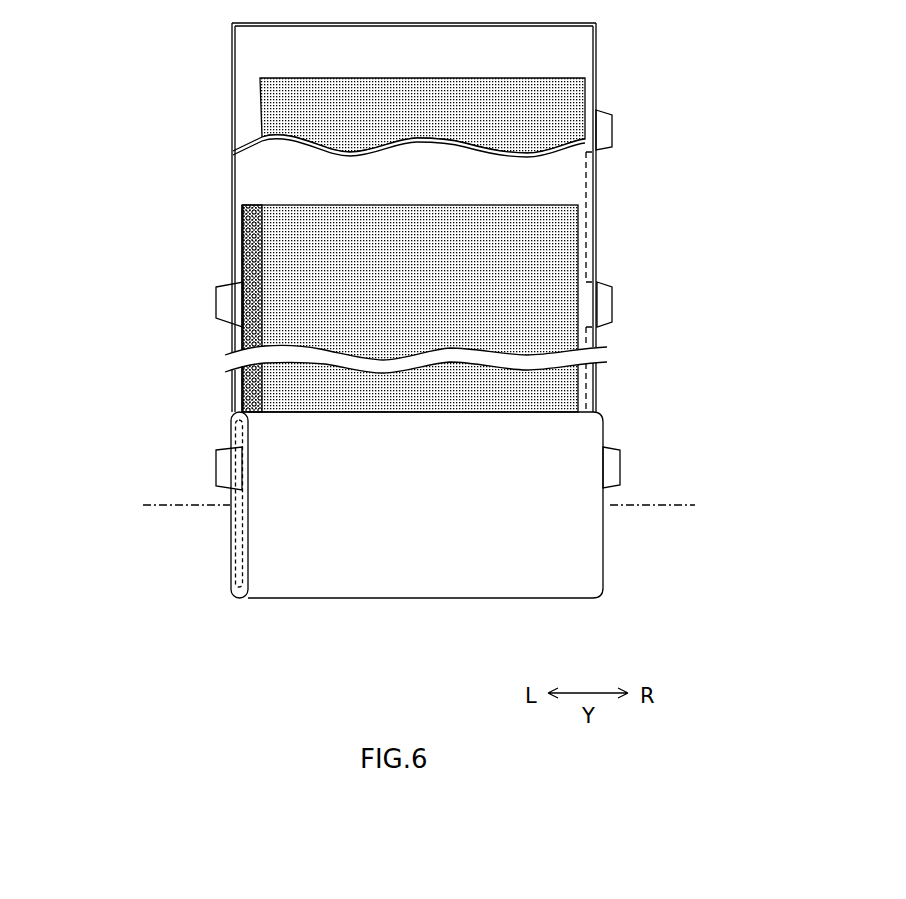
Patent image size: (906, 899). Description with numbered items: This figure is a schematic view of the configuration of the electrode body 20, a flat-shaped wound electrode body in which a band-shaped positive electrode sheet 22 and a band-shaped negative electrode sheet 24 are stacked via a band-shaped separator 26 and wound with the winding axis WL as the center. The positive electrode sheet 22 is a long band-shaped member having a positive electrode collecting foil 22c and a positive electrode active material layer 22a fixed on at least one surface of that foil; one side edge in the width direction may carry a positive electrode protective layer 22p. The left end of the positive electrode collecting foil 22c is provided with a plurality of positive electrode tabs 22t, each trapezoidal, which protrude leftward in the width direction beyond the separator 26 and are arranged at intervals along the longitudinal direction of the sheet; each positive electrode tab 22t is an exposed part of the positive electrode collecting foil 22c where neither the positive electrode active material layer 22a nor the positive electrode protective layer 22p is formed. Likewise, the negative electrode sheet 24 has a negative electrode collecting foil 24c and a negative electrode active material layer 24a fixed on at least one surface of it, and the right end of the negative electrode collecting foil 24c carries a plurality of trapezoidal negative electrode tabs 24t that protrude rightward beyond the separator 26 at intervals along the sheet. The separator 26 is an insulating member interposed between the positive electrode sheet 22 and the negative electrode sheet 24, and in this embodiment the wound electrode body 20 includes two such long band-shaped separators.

The electrode body 20 is at (473, 577).
The positive electrode sheet 22 is at (306, 347).
The positive electrode active material layer 22a is at (297, 270).
The positive electrode protective layer 22p is at (240, 222).
The positive electrode collecting foil 22c is at (243, 341).
The positive electrode tab 22t is at (223, 307).
The negative electrode sheet 24 is at (510, 280).
The negative electrode active material layer 24a is at (565, 101).
The negative electrode collecting foil 24c is at (588, 220).
The negative electrode tab 24t is at (607, 128).
The separator 26 is at (252, 43).
The winding axis WL is at (680, 503).